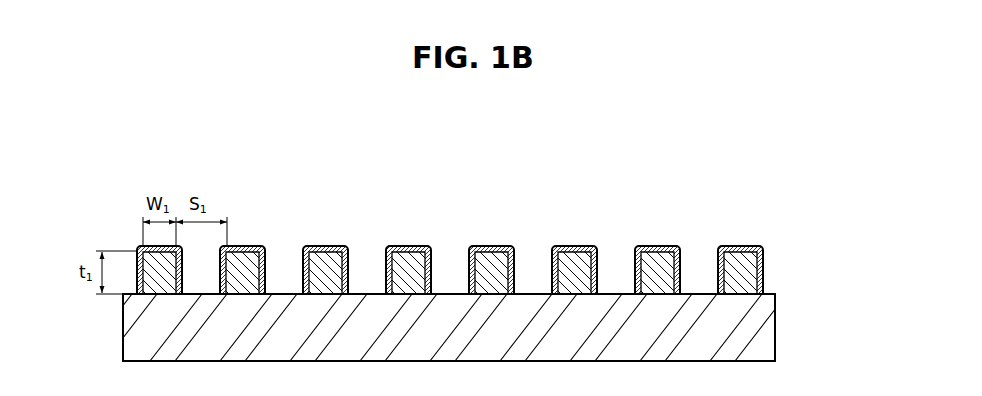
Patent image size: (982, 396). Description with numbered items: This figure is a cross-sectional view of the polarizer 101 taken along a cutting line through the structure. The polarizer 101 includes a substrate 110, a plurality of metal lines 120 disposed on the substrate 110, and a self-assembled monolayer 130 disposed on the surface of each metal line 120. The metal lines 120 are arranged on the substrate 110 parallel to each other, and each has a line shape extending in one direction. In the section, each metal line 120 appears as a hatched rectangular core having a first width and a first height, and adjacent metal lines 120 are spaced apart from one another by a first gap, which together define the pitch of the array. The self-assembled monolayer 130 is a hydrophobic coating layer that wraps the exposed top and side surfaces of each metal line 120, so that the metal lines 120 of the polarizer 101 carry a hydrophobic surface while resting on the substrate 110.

The polarizer 101 is at (122, 162).
The substrate 110 is at (758, 327).
The metal line 120 is at (737, 259).
The self-assembled monolayer 130 is at (763, 277).